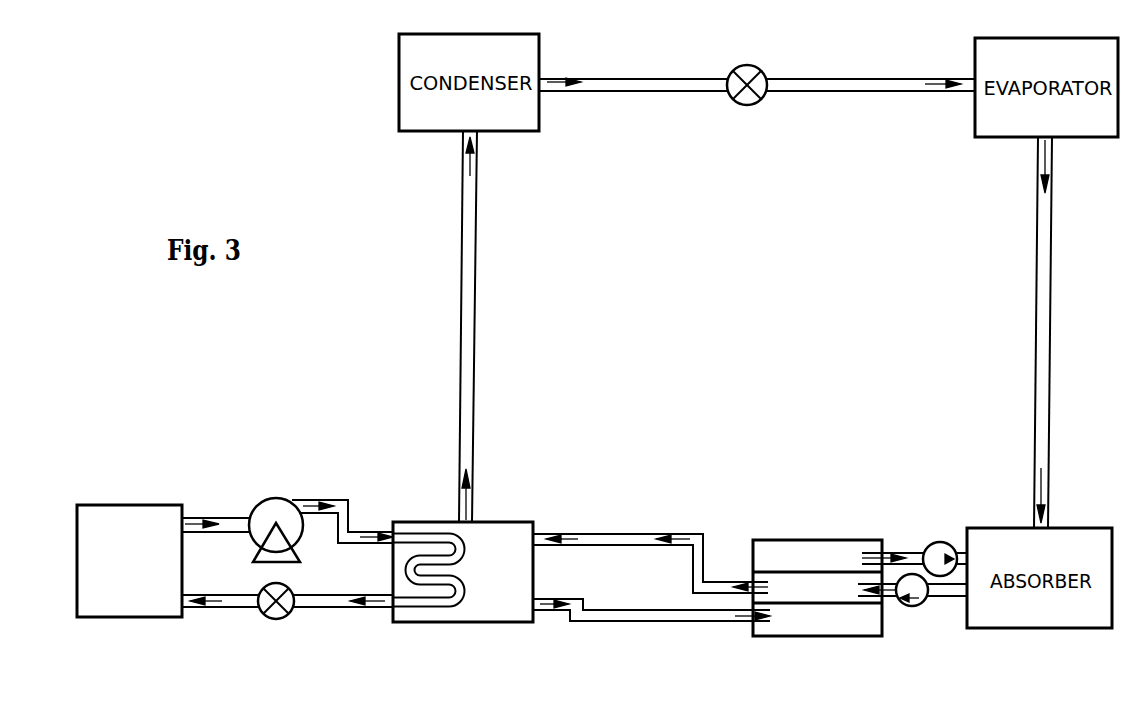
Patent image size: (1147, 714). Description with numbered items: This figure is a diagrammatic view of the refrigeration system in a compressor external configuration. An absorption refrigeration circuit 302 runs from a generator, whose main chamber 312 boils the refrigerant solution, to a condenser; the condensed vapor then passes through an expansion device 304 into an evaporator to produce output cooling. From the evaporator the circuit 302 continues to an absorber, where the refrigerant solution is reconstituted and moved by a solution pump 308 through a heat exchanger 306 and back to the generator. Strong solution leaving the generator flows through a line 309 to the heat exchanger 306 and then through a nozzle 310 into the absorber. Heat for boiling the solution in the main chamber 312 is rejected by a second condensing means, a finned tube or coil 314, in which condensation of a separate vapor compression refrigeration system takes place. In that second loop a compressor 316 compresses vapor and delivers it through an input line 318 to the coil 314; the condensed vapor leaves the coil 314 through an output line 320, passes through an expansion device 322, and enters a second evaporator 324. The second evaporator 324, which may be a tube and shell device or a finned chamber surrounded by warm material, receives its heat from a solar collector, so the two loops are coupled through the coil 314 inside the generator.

The absorption refrigeration circuit 302 is at (476, 327).
The expansion device 304 is at (752, 66).
The heat exchanger 306 is at (829, 629).
The solution pump 308 is at (922, 606).
The line 309 is at (594, 624).
The nozzle 310 is at (935, 541).
The main chamber 312 is at (514, 583).
The coil 314 is at (434, 548).
The compressor 316 is at (258, 502).
The input line 318 is at (353, 517).
The output line 320 is at (317, 608).
The expansion device 322 is at (270, 619).
The second evaporator 324 is at (112, 575).